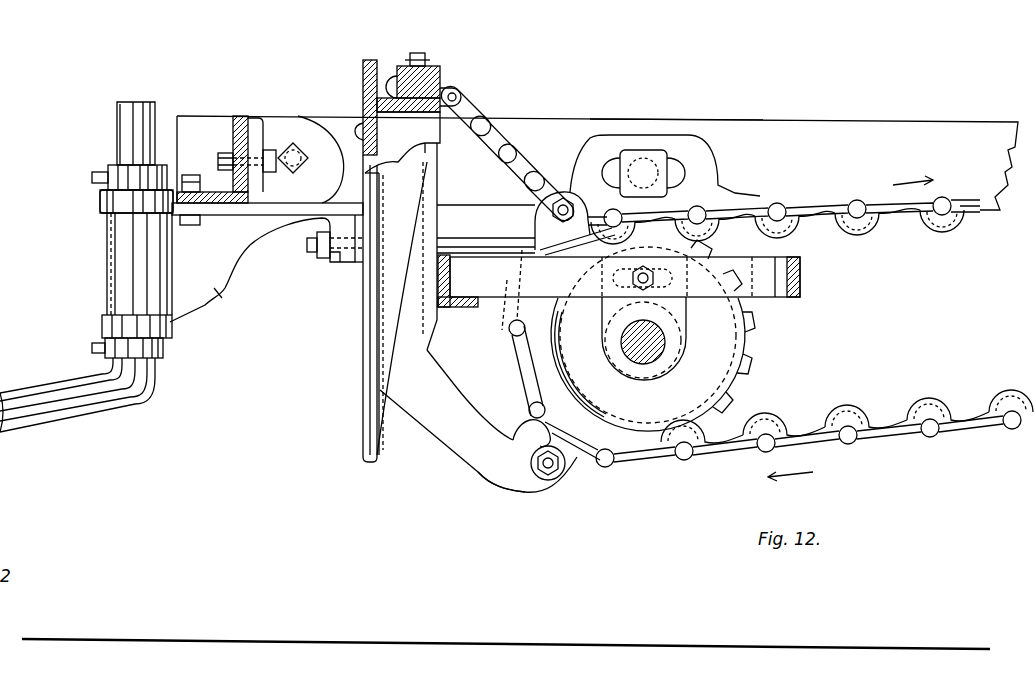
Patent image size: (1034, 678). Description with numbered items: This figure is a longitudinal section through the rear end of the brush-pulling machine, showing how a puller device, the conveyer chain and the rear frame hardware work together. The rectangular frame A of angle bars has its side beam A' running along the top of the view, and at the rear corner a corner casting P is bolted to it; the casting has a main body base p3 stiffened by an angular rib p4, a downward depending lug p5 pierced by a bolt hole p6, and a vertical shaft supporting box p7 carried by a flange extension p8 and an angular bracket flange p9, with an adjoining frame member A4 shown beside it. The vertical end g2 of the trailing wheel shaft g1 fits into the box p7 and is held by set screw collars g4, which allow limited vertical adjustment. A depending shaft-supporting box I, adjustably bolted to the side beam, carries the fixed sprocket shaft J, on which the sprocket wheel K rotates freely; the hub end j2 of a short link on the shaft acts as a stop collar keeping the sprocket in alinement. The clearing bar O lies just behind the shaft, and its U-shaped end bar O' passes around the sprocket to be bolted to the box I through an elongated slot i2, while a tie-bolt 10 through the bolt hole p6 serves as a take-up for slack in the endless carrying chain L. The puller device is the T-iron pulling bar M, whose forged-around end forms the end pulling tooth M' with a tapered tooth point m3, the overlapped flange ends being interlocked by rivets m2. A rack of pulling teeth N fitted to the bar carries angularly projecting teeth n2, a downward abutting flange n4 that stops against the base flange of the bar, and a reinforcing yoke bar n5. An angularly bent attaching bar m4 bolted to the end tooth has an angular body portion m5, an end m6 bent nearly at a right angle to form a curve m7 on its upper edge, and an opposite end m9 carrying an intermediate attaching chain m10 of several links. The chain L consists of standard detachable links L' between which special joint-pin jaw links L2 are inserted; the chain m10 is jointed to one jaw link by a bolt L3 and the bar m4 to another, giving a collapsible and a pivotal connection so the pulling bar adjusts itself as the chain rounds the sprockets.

The frame A is at (597, 151).
The side beam A' is at (696, 106).
The bracket A4 is at (233, 150).
The main frame corner casting P is at (111, 187).
The main body base p3 is at (292, 207).
The angular rib p4 is at (263, 227).
The depending lug p5 is at (337, 263).
The bolt hole p6 is at (357, 263).
The shaft supporting box p7 is at (110, 262).
The flange extension p8 is at (152, 212).
The angular bracket flange p9 is at (218, 292).
The trailing wheel shaft g1 is at (105, 397).
The vertical shaft end g2 is at (130, 106).
The set screw collar g4 is at (120, 170).
The pulling tooth n2 is at (366, 332).
The abutting flange n4 is at (366, 156).
The reinforcing yoke bar n5 is at (442, 76).
The rack of pulling teeth N is at (425, 128).
The pulling bar M is at (383, 98).
The end pulling tooth M' is at (486, 212).
The rivet m2 is at (358, 134).
The tooth point m3 is at (408, 204).
The angular attaching bar m4 is at (427, 245).
The angular body portion m5 is at (448, 387).
The bent end m6 is at (514, 490).
The curve m7 is at (522, 404).
The opposite end m9 is at (393, 82).
The intermediate attaching chain m10 is at (508, 142).
The tie-bolt 10 is at (484, 248).
The clearing bar O is at (458, 295).
The U-shaped end bar O' is at (625, 277).
The elongated slot i2 is at (668, 278).
The hub end j2 is at (686, 306).
The sprocket-carrying shaft J is at (642, 362).
The sprocket wheel K is at (735, 356).
The shaft-supporting box I is at (727, 193).
The carrying chain L is at (808, 332).
The standard detachable link L' is at (812, 326).
The joint-pin jaw link L2 is at (557, 193).
The bolt L3 is at (566, 195).